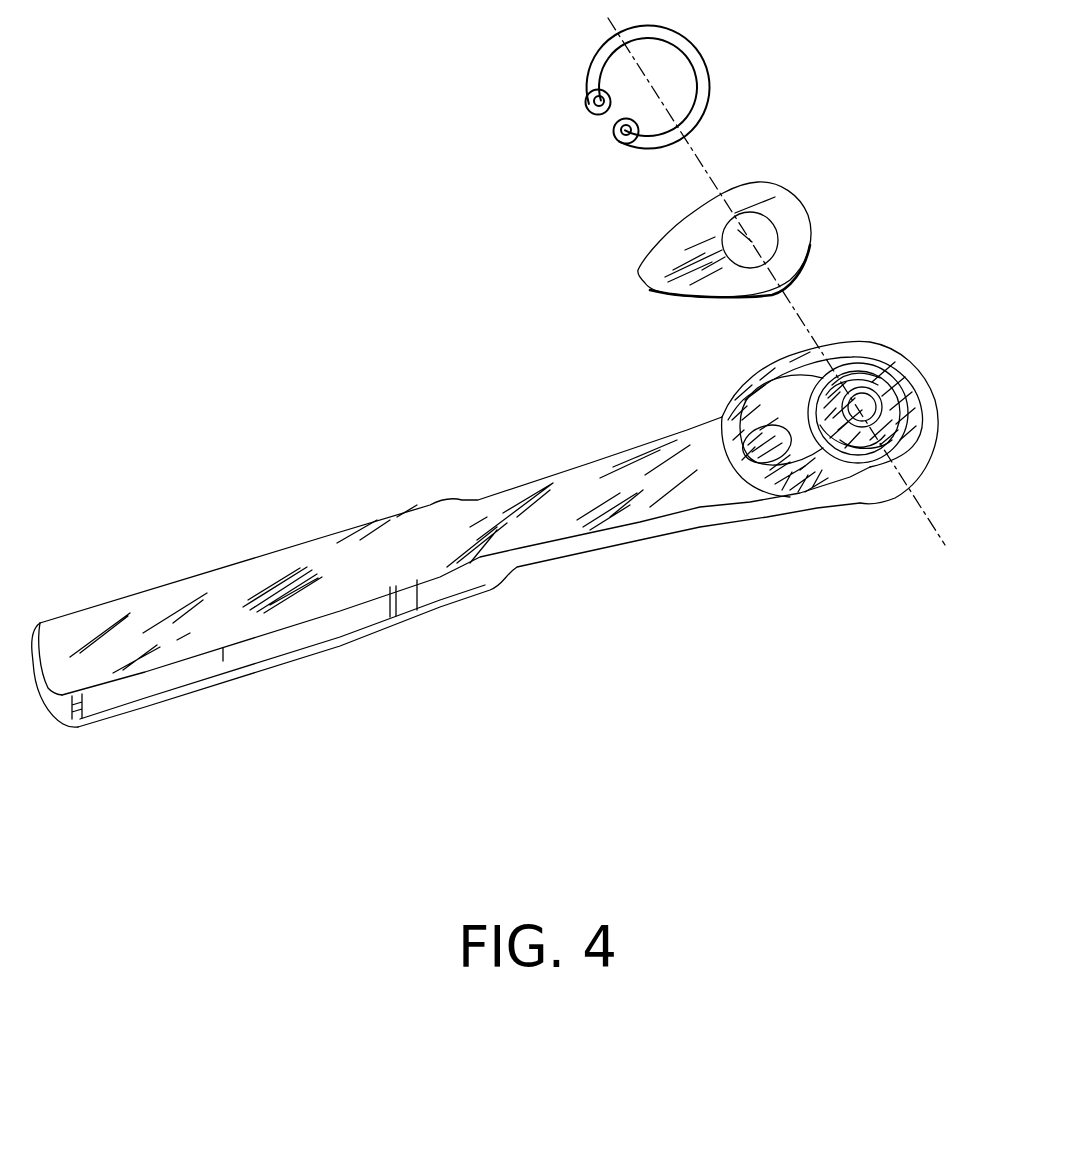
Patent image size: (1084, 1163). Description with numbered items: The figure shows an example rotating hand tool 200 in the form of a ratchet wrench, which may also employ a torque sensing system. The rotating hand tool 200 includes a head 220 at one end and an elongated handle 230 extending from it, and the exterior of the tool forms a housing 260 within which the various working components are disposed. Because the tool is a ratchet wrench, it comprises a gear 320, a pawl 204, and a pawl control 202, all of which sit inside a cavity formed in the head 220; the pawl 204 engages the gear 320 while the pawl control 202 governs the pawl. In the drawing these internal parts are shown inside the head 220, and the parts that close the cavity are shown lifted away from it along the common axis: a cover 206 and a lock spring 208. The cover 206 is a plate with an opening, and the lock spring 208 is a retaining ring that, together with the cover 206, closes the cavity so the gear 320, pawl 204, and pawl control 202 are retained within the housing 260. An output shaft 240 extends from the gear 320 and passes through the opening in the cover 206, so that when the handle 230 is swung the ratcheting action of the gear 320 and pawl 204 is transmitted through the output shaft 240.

The rotating hand tool 200 is at (264, 290).
The pawl control 202 is at (762, 437).
The pawl 204 is at (768, 408).
The cover 206 is at (688, 240).
The lock spring 208 is at (588, 90).
The head 220 is at (860, 507).
The handle 230 is at (360, 653).
The output shaft 240 is at (842, 373).
The housing 260 is at (795, 362).
The gear 320 is at (877, 377).